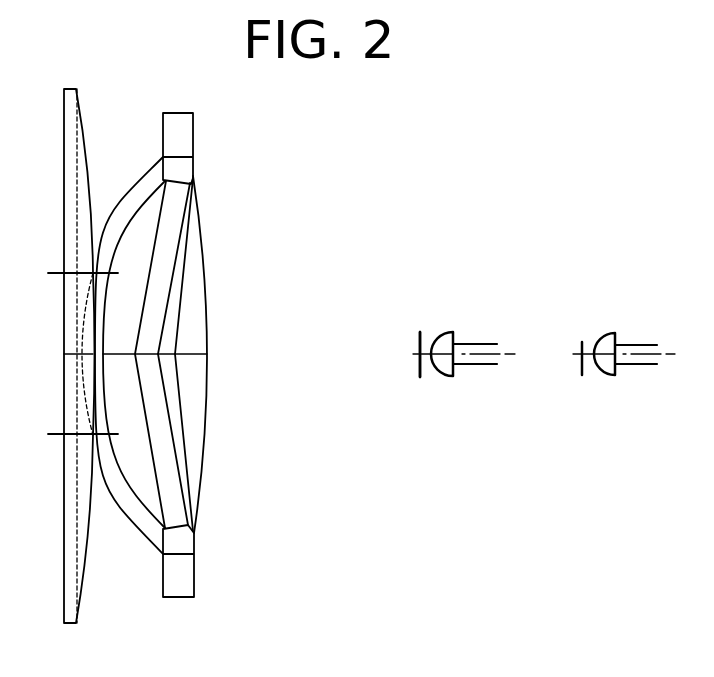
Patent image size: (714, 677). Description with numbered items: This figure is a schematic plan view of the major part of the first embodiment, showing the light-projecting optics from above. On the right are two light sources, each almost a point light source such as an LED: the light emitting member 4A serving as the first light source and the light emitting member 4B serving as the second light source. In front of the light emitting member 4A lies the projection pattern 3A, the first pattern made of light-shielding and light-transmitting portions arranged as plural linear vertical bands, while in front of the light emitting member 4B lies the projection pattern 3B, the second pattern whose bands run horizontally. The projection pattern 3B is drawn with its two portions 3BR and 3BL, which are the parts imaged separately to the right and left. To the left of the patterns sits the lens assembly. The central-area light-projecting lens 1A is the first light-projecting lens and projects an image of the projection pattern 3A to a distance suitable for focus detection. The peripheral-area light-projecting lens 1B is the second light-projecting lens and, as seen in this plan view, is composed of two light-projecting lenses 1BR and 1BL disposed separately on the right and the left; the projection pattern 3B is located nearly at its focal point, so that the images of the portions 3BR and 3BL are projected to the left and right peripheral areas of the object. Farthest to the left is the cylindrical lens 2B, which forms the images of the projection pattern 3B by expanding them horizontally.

The central-area light-projecting lens 1A is at (208, 344).
The peripheral-area light-projecting lens 1B is at (167, 486).
The light-projecting lens 1BR is at (177, 273).
The light-projecting lens 1BL is at (183, 447).
The cylindrical lens 2B is at (75, 98).
The projection pattern 3A is at (583, 340).
The projection pattern 3B is at (430, 364).
The portion of projection pattern 3BR is at (422, 337).
The portion of projection pattern 3BL is at (419, 372).
The light emitting member 4A is at (603, 380).
The light emitting member 4B is at (447, 330).